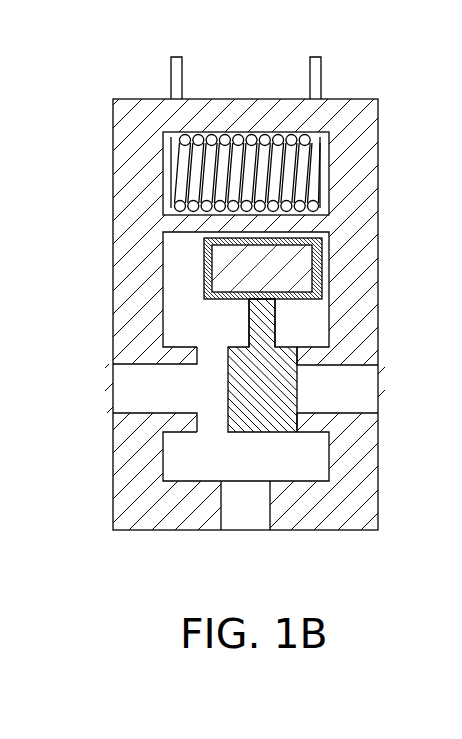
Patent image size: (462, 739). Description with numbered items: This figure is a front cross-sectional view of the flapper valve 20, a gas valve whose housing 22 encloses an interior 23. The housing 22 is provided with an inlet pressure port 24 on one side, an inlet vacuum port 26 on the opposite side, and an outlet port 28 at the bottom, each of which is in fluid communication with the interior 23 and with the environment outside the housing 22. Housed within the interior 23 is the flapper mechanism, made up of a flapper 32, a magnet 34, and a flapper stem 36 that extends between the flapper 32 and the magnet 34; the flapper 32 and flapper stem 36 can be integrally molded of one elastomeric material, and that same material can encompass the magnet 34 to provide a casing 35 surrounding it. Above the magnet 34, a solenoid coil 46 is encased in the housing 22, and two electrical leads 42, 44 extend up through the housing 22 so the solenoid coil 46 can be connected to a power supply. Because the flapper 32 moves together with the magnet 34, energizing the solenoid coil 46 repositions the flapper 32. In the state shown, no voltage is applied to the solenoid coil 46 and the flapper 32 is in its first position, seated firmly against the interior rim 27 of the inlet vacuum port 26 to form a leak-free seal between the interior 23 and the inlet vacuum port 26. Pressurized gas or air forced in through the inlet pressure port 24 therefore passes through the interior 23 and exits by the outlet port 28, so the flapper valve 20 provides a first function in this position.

The flapper valve 20 is at (395, 122).
The housing 22 is at (378, 465).
The interior 23 is at (166, 266).
The inlet pressure port 24 is at (140, 361).
The inlet vacuum port 26 is at (358, 413).
The interior rim 27 is at (308, 424).
The outlet port 28 is at (270, 513).
The flapper 32 is at (297, 379).
The magnet 34 is at (297, 290).
The casing 35 is at (317, 245).
The flapper stem 36 is at (249, 321).
The electrical lead 42 is at (322, 78).
The electrical lead 44 is at (182, 72).
The solenoid coil 46 is at (195, 164).